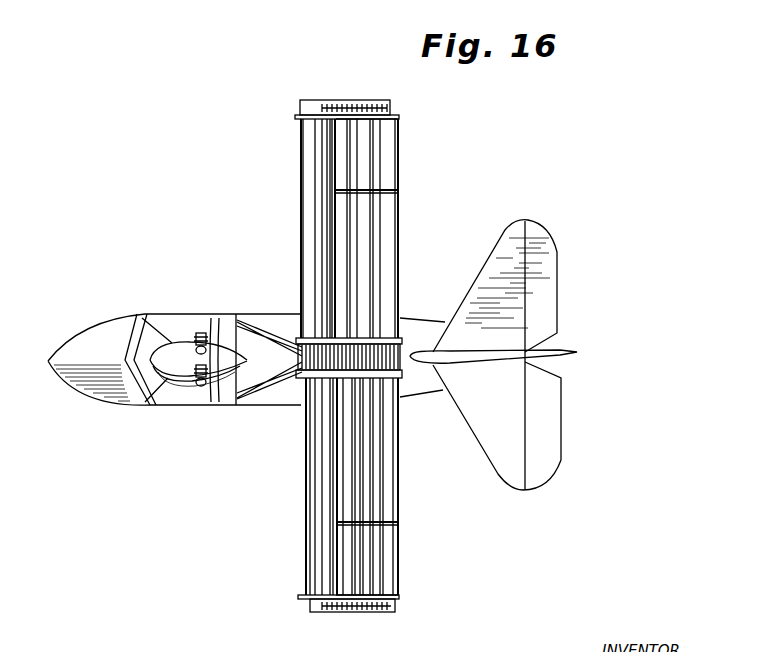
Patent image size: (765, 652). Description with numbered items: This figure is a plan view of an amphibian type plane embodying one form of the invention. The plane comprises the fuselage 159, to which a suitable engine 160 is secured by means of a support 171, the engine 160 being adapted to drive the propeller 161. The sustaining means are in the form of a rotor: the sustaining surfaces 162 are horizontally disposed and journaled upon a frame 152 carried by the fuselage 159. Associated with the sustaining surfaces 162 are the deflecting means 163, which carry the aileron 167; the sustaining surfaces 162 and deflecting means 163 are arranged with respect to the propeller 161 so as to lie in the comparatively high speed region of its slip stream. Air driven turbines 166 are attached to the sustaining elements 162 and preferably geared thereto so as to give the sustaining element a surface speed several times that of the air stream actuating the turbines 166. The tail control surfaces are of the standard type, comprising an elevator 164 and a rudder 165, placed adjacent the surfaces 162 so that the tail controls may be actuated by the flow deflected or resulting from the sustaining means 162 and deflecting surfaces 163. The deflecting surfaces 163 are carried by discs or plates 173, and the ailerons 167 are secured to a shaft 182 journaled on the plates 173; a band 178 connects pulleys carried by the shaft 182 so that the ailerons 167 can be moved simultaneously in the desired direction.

The frame 152 is at (267, 340).
The fuselage 159 is at (110, 398).
The engine 160 is at (175, 340).
The propeller 161 is at (237, 322).
The sustaining surfaces 162 is at (283, 538).
The deflecting means 163 is at (397, 222).
The elevator 164 is at (558, 292).
The rudder 165 is at (543, 351).
The air driven turbines 166 is at (298, 378).
The aileron 167 is at (397, 146).
The support 171 is at (213, 404).
The discs or plates 173 is at (298, 117).
The band 178 is at (325, 604).
The shaft 182 is at (398, 600).